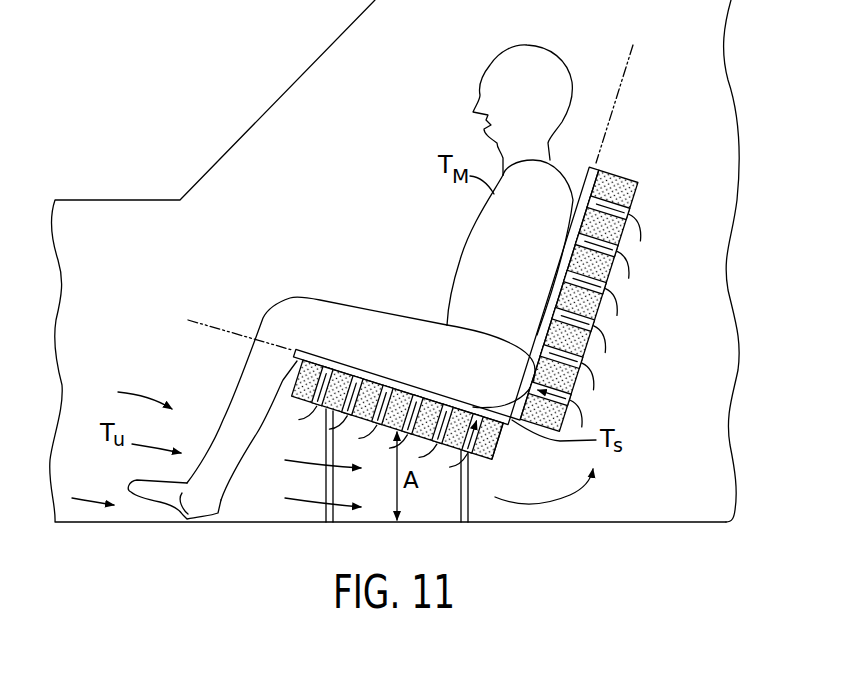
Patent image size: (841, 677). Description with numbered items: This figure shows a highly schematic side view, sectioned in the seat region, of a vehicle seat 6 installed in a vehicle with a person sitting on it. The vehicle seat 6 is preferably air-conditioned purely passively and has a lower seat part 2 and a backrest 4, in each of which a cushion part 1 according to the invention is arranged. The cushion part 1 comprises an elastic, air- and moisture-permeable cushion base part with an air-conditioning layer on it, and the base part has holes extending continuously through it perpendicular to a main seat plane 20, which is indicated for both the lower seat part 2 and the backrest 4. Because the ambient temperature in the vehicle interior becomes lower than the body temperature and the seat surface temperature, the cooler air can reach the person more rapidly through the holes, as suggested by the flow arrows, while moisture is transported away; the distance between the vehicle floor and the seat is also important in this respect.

The cushion part 1 is at (447, 267).
The lower seat part 2 is at (349, 366).
The backrest 4 is at (617, 171).
The vehicle seat 6 is at (514, 450).
The main seat plane 20 is at (627, 62).